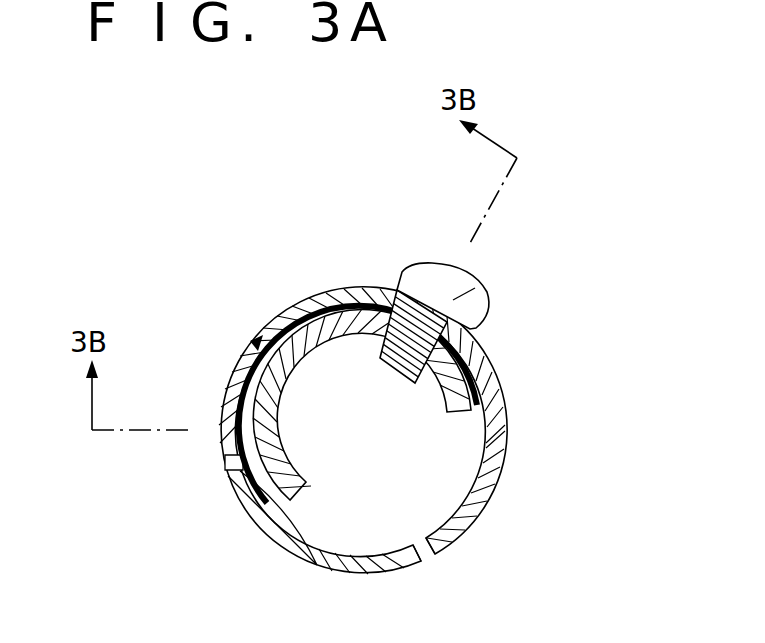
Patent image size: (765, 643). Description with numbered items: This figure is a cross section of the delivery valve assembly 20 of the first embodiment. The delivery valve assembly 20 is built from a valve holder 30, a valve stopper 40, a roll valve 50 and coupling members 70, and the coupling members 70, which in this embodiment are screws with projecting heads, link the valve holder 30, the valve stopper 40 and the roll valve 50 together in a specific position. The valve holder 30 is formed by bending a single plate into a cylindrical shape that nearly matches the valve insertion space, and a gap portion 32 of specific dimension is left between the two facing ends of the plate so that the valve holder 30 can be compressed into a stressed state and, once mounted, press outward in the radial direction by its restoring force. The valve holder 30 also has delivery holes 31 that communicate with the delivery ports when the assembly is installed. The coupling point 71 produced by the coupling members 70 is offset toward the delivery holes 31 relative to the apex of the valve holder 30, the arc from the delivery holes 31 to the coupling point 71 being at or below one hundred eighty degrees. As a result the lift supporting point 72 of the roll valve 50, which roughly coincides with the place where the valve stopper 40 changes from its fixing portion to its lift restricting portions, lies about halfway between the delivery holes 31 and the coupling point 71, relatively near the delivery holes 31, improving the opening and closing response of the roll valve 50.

The delivery valve assembly 20 is at (272, 252).
The valve holder 30 is at (480, 516).
The delivery holes 31 is at (216, 463).
The gap portion 32 is at (430, 557).
The valve stopper 40 is at (456, 378).
The roll valve 50 is at (333, 298).
The coupling members 70 is at (482, 290).
The coupling point 71 is at (395, 381).
The lift supporting point 72 is at (250, 343).